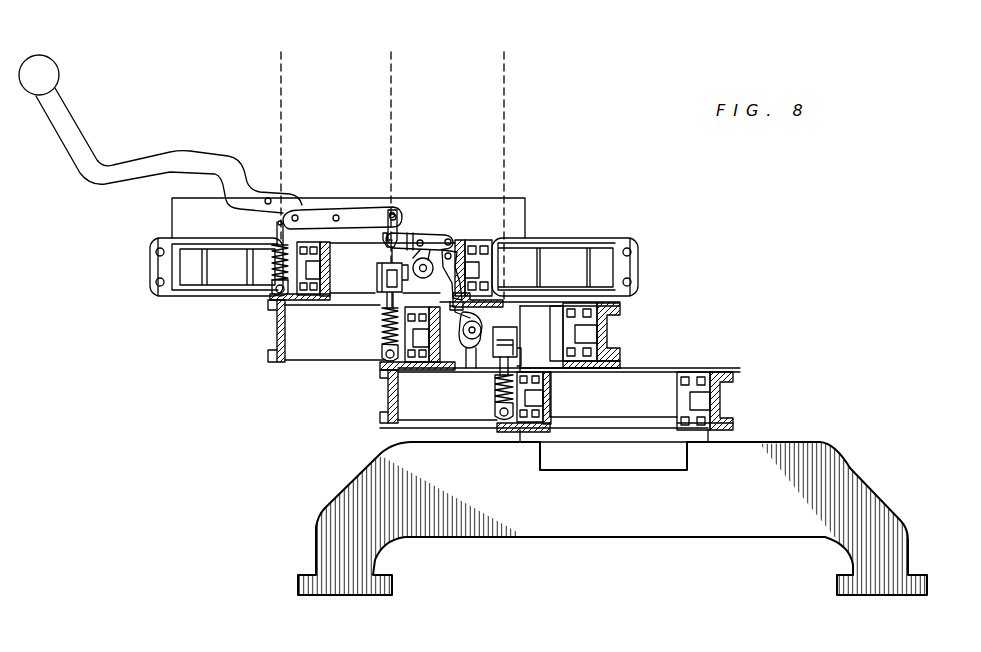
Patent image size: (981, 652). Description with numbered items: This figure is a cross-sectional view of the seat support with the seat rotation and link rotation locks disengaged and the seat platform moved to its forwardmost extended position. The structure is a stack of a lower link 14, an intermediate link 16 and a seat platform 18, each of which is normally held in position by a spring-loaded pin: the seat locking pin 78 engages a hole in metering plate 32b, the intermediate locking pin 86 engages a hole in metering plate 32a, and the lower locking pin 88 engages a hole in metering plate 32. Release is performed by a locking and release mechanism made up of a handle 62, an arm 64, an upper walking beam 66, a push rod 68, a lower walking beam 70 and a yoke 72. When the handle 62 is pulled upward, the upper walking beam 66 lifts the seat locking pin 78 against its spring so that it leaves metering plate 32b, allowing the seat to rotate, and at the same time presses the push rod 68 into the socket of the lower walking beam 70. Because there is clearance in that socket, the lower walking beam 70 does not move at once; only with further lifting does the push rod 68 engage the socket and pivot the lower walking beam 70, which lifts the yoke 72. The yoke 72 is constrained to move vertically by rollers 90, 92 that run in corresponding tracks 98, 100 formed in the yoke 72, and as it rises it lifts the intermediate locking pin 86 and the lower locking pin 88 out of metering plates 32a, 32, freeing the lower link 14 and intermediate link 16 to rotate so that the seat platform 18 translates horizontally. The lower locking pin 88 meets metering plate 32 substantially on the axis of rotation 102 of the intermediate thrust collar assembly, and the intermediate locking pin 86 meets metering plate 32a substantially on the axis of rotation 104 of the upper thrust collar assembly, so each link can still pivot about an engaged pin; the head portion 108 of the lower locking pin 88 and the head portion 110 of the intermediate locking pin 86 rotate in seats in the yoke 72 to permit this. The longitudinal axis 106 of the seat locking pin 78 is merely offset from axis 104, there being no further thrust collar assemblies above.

The handle 62 is at (52, 62).
The arm 64 is at (73, 130).
The upper walking beam 66 is at (346, 212).
The push rod 68 is at (395, 227).
The lower walking beam 70 is at (436, 238).
The yoke 72 is at (474, 285).
The seat locking pin 78 is at (268, 287).
The intermediate locking pin 86 is at (383, 350).
The lower locking pin 88 is at (495, 412).
The roller 90 is at (412, 266).
The roller 92 is at (483, 325).
The track 98 is at (384, 305).
The track 100 is at (471, 346).
The axis of rotation 102 is at (505, 70).
The axis of rotation 104 is at (392, 70).
The longitudinal axis 106 is at (283, 70).
The head portion 108 is at (519, 333).
The head portion 110 is at (382, 278).
The lower link 14 is at (716, 395).
The intermediate link 16 is at (606, 325).
The seat platform 18 is at (158, 268).
The metering plate 32 is at (733, 433).
The metering plate 32a is at (616, 367).
The metering plate 32b is at (512, 299).